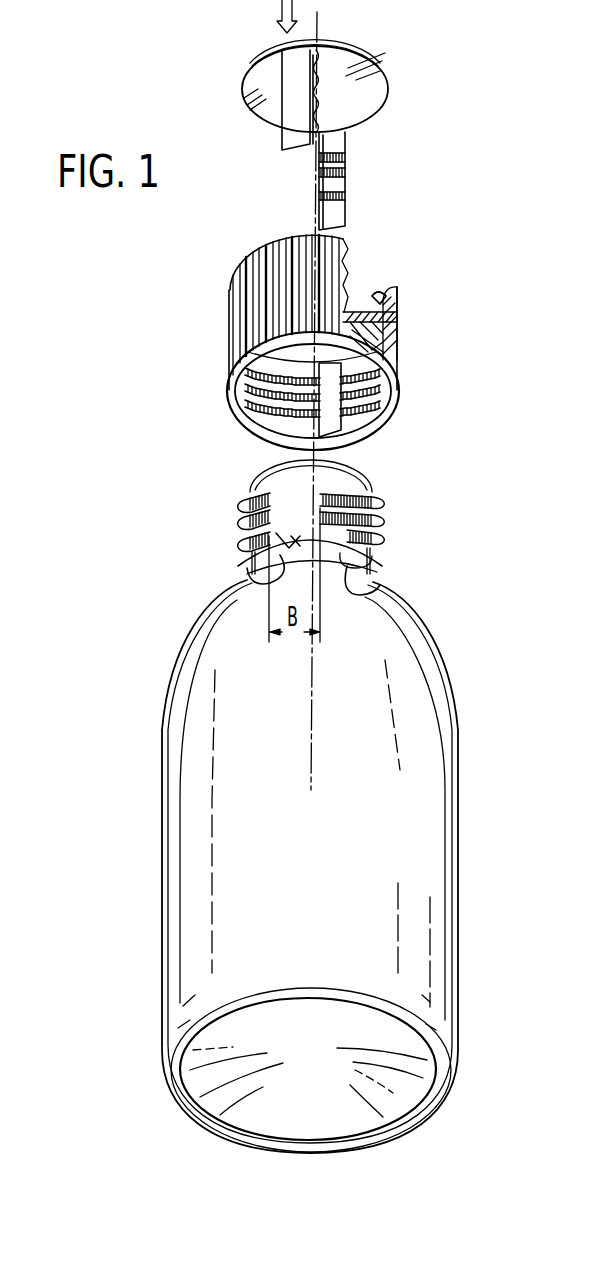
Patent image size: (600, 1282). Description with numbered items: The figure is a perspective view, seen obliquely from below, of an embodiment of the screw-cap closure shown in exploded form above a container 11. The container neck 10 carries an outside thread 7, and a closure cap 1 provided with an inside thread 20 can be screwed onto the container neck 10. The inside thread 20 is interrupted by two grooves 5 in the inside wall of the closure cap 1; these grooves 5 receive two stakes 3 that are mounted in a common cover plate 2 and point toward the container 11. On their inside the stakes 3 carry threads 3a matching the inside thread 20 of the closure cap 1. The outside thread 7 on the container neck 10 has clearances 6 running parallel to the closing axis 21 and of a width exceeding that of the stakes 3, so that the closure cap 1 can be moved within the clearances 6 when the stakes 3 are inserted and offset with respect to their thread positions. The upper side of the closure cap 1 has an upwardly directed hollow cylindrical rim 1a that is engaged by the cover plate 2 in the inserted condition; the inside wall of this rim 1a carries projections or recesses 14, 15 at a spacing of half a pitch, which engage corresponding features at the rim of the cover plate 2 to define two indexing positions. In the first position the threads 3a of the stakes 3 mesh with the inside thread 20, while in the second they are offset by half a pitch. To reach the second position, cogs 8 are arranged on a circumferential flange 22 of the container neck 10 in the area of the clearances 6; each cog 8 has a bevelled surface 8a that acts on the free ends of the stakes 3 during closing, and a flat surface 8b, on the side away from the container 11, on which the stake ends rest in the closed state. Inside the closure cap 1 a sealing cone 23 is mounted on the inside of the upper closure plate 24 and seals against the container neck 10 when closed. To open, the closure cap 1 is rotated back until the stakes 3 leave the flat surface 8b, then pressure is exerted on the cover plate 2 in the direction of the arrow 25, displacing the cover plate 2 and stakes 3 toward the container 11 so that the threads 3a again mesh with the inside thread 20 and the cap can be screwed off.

The closure cap 1 is at (310, 342).
The hollow cylindrical rim 1a is at (397, 298).
The cover plate 2 is at (389, 73).
The stakes 3 is at (287, 137).
The threads 3a is at (319, 117).
The grooves 5 is at (328, 420).
The clearances 6 is at (288, 535).
The outside thread 7 is at (380, 517).
The cogs 8 is at (253, 575).
The bevelled surface 8a is at (372, 553).
The flat surface 8b is at (247, 537).
The container neck 10 is at (310, 526).
The container 11 is at (455, 808).
The projections or recesses 14 is at (372, 295).
The projections or recesses 15 is at (379, 298).
The inside thread 20 is at (290, 421).
The closing axis 21 is at (312, 746).
The circumferential flange 22 is at (375, 588).
The sealing cone 23 is at (398, 336).
The upper closure plate 24 is at (345, 313).
The arrow 25 is at (282, 12).